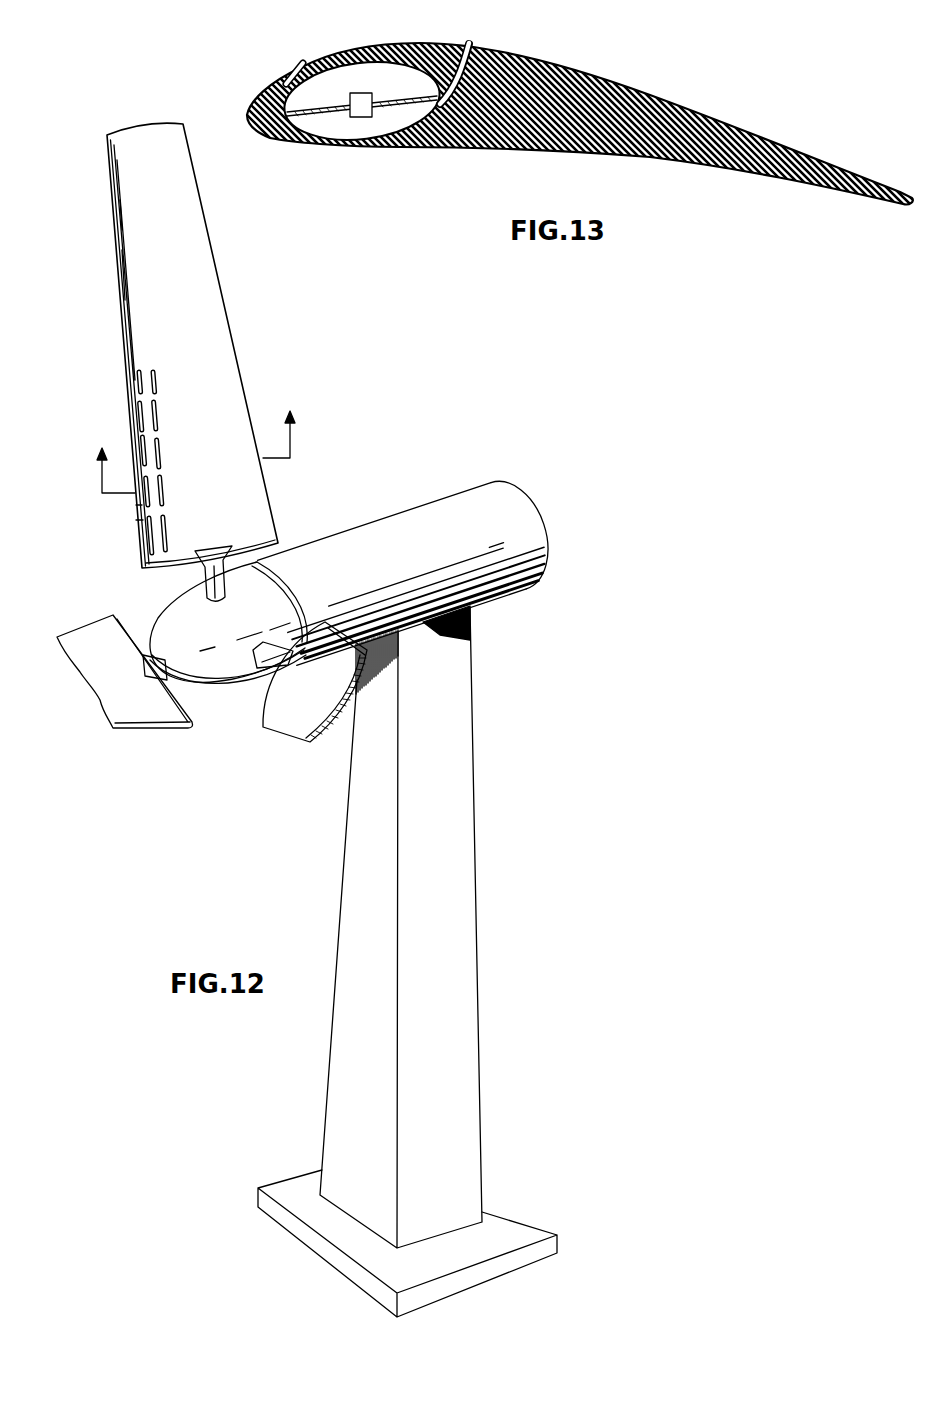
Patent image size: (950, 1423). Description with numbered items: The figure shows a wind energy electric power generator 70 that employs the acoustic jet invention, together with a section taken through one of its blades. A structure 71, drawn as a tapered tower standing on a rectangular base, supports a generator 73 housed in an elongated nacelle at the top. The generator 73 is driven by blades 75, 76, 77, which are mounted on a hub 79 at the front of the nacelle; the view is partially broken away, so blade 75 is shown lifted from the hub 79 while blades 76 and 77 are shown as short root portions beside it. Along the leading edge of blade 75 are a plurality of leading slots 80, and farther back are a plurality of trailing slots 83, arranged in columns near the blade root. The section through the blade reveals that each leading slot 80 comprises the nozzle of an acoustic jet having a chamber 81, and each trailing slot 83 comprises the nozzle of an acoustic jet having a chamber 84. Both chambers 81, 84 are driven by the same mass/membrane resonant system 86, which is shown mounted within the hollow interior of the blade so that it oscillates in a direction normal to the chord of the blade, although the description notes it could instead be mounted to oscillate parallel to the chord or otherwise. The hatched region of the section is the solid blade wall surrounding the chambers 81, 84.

In FIG. 12, the wind energy electric power generator 70 is at (90, 603).
In FIG. 12, the structure 71 is at (487, 1187).
In FIG. 12, the generator 73 is at (474, 500).
In FIG. 13, the blade 75 is at (583, 153).
In FIG. 12, the blade 75 is at (189, 345).
In FIG. 12, the blade 76 is at (110, 700).
In FIG. 12, the blade 77 is at (277, 718).
In FIG. 12, the hub 79 is at (182, 612).
In FIG. 13, the leading slot 80 is at (298, 72).
In FIG. 12, the leading slot 80 is at (143, 522).
In FIG. 13, the chamber 81 is at (378, 75).
In FIG. 13, the trailing slot 83 is at (467, 47).
In FIG. 12, the trailing slot 83 is at (163, 527).
In FIG. 13, the chamber 84 is at (378, 130).
In FIG. 13, the mass/membrane resonant system 86 is at (357, 115).